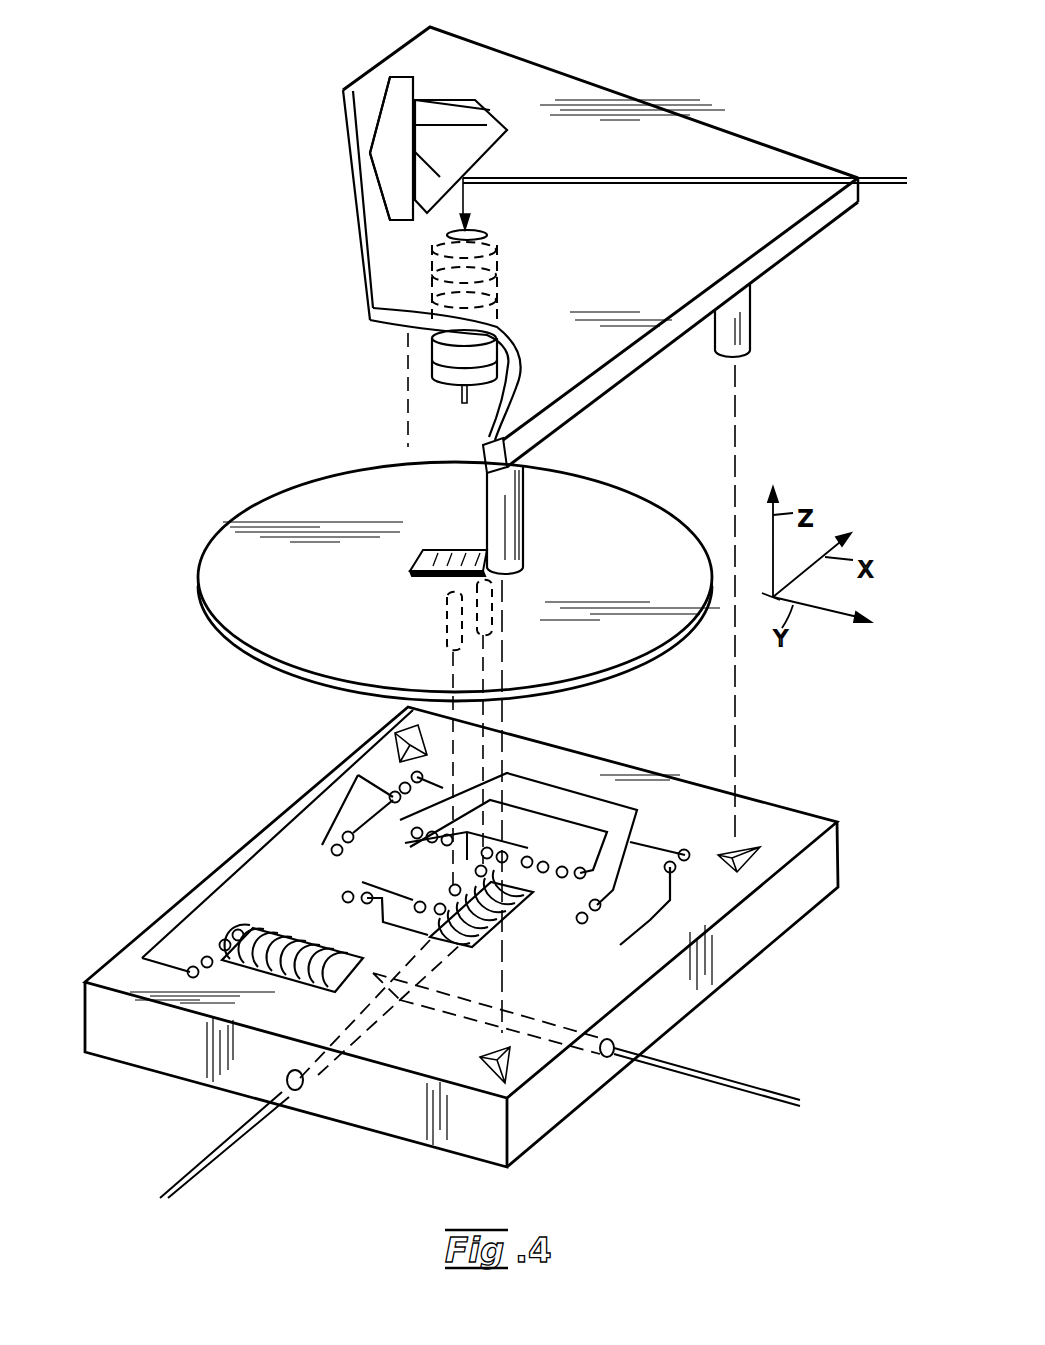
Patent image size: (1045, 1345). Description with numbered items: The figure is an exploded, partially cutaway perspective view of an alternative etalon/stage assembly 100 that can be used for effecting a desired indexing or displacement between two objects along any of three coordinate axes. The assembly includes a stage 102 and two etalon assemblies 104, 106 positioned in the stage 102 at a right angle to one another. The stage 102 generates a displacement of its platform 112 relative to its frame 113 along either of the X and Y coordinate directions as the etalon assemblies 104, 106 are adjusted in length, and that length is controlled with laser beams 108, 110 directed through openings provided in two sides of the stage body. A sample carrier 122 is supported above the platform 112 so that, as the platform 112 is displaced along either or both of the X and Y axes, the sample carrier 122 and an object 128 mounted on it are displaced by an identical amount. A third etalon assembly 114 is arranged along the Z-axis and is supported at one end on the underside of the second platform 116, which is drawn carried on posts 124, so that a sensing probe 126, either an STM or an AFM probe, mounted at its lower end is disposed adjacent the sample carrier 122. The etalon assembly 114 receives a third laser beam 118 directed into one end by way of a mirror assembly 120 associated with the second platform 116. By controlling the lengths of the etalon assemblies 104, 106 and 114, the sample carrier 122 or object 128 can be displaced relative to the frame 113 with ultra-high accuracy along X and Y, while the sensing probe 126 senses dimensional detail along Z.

The etalon/stage assembly 100 is at (690, 97).
The stage 102 is at (597, 755).
The etalon assembly 104 is at (293, 962).
The etalon assembly 106 is at (500, 915).
The laser beam 108 is at (705, 1072).
The laser beam 110 is at (227, 1148).
The platform 112 is at (440, 875).
The frame 113 is at (122, 967).
The third etalon assembly 114 is at (440, 348).
The second platform 116 is at (627, 372).
The third laser beam 118 is at (883, 176).
The mirror assembly 120 is at (500, 106).
The sample carrier 122 is at (250, 503).
The post 124 is at (740, 334).
The sensing probe 126 is at (461, 392).
The object 128 is at (417, 555).